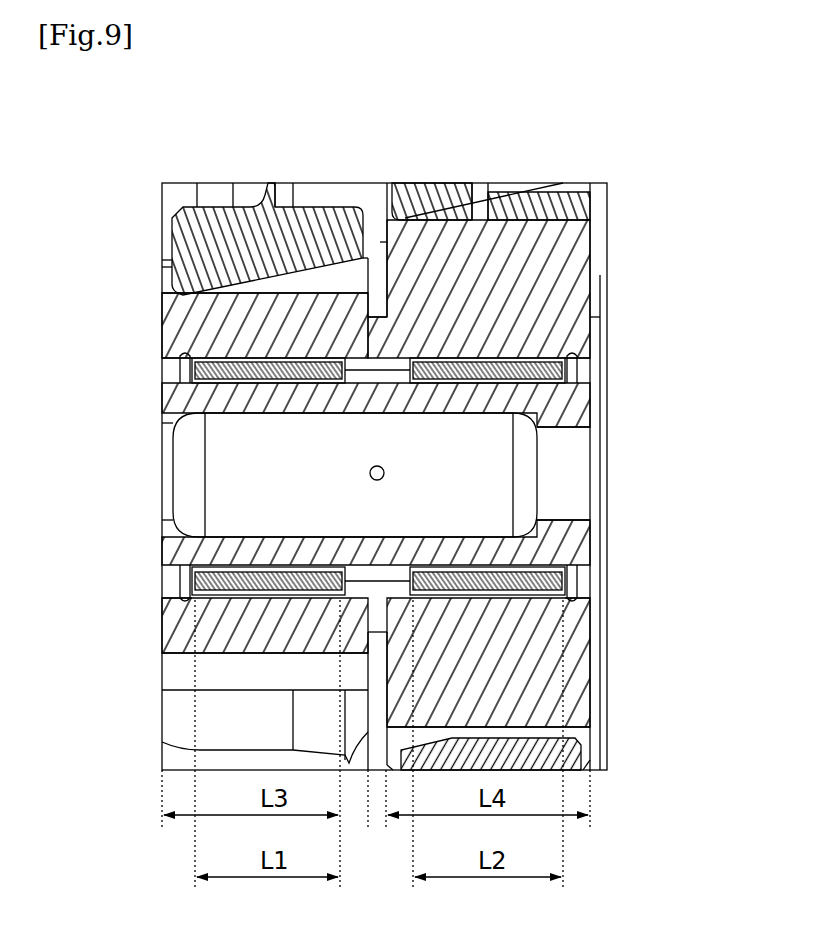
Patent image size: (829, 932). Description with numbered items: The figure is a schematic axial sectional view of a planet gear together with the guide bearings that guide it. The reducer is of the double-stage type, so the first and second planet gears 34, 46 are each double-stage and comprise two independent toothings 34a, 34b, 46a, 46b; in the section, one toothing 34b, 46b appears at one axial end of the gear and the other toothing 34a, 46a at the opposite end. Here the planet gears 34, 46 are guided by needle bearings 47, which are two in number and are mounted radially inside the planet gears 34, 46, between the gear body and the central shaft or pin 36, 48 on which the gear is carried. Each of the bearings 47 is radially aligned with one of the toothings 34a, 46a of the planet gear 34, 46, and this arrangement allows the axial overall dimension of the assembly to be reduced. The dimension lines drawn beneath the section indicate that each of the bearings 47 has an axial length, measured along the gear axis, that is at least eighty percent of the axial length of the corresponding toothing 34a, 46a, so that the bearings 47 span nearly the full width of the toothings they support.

The first planet gear 34 is at (452, 476).
The second planet gear 46 is at (612, 656).
The toothing 34a is at (505, 415).
The toothing 46a is at (498, 218).
The toothing 34b is at (275, 186).
The toothing 46b is at (297, 270).
The rotor body 36 is at (472, 473).
The rotor body 48 is at (567, 532).
The needle bearing 47 is at (554, 397).